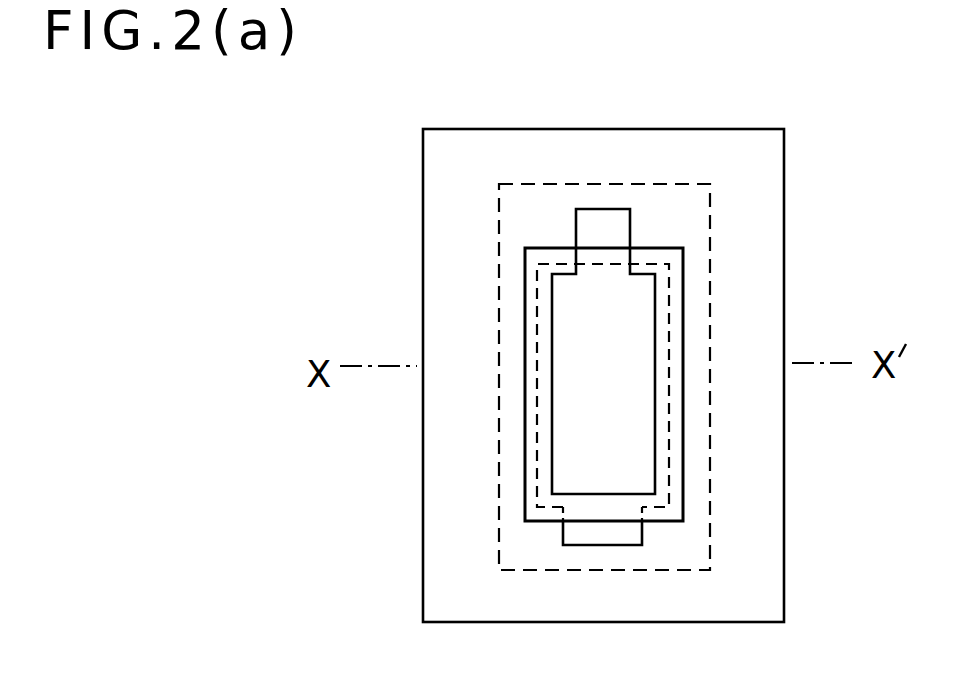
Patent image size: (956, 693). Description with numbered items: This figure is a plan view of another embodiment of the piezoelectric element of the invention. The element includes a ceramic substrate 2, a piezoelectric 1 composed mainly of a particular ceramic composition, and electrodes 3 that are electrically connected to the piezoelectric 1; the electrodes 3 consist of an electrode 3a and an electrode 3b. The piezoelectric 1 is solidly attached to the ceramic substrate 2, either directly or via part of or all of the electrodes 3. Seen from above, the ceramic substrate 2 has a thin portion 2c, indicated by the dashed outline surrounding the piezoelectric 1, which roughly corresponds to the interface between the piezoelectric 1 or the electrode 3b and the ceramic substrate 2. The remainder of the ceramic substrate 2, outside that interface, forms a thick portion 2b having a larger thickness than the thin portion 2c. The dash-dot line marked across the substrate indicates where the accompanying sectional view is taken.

The piezoelectric 1 is at (678, 260).
The ceramic substrate 2 is at (590, 375).
The thick portion 2b is at (437, 265).
The thin portion 2c is at (518, 218).
The electrodes 3 is at (502, 325).
The electrode 3a is at (610, 227).
The electrode 3b is at (573, 532).